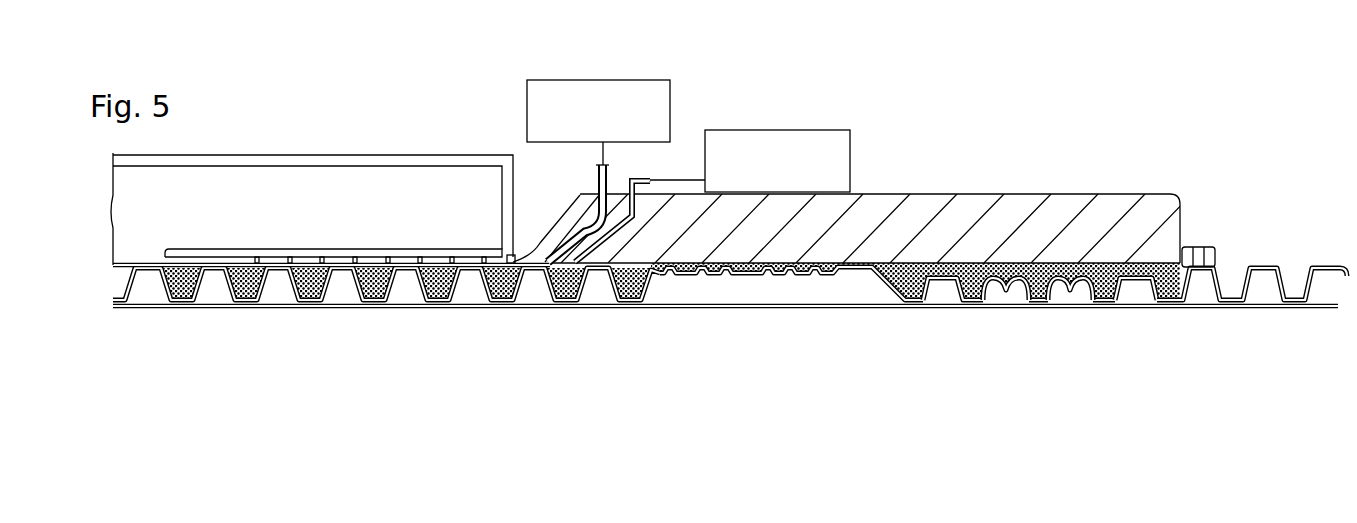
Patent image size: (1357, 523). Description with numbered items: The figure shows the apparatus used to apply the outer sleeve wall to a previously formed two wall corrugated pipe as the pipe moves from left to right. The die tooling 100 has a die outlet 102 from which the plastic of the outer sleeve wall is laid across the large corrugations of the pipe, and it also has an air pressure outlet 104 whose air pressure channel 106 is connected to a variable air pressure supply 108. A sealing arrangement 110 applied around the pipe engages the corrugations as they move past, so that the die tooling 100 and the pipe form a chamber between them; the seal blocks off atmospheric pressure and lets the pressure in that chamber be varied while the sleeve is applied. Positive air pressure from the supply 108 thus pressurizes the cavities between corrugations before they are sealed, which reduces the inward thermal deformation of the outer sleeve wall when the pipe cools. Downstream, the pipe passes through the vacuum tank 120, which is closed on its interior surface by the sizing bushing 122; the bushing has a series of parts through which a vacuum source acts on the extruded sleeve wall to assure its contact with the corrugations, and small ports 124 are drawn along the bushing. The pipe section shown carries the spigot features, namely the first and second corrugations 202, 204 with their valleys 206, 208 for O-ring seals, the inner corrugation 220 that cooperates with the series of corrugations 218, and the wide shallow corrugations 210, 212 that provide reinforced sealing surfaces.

The die tooling 100 is at (910, 212).
The die outlet 102 is at (527, 257).
The air pressure outlet 104 is at (597, 256).
The air pressure channel 106 is at (643, 178).
The variable air pressure supply 108 is at (767, 130).
The sealing arrangement 110 is at (1200, 247).
The vacuum tank 120 is at (443, 207).
The sizing bushing 122 is at (203, 253).
The vacuum ports 124 is at (325, 258).
The first corrugation 202 is at (993, 302).
The second corrugation 204 is at (1100, 277).
The valley 206 is at (1007, 288).
The valley 208 is at (1072, 286).
The shallow corrugation 210 is at (685, 279).
The shallow corrugation 212 is at (747, 279).
The series of corrugations 218 is at (793, 257).
The inner corrugation 220 is at (1123, 288).